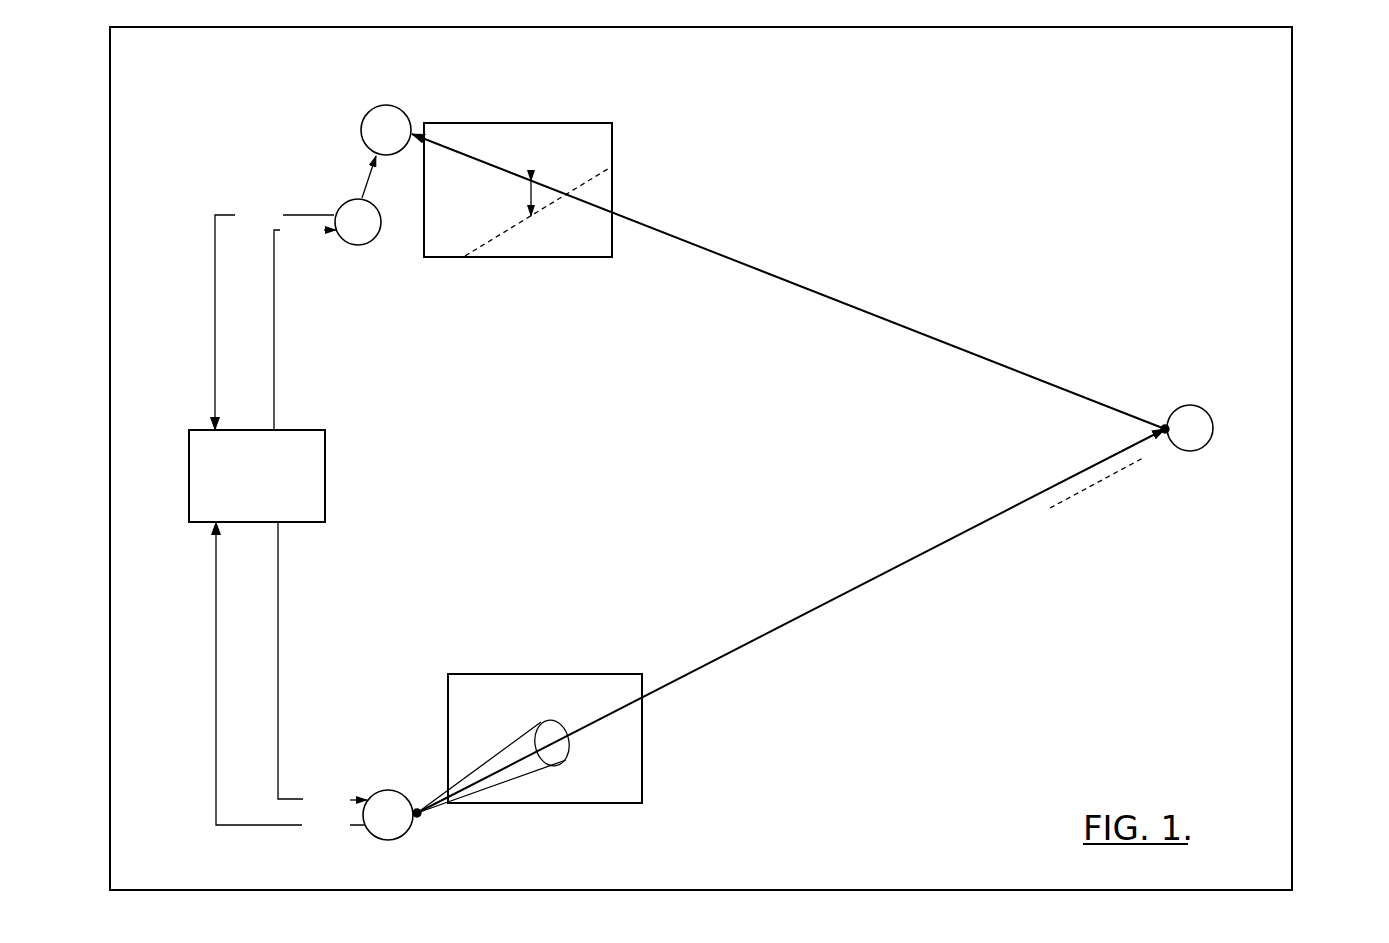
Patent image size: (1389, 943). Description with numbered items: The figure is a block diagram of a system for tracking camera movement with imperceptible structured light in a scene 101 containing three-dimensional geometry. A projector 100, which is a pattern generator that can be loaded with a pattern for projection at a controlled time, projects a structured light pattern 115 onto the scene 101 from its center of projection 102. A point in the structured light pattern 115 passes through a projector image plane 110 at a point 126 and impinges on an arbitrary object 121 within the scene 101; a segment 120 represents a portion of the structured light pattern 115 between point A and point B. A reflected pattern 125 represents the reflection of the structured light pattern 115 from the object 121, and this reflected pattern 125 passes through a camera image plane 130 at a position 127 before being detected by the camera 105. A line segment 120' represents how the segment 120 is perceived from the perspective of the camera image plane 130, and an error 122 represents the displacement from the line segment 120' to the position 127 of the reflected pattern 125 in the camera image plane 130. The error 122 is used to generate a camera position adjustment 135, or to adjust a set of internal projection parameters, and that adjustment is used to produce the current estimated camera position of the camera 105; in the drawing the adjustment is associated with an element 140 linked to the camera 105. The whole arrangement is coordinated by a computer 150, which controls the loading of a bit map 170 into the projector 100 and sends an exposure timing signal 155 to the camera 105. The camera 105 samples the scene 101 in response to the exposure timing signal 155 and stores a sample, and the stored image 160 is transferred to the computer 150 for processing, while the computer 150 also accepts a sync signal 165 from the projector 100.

The projector 100 is at (392, 815).
The scene 101 is at (1293, 282).
The center of projection 102 is at (482, 763).
The camera 105 is at (386, 130).
The projector image plane 110 is at (585, 674).
The structured light pattern 115 is at (782, 625).
The segment 120 is at (1103, 486).
The line segment 120' is at (538, 211).
The object 121 is at (1187, 428).
The error 122 is at (527, 198).
The reflected pattern 125 is at (823, 292).
The point 126 is at (553, 745).
The position 127 is at (531, 181).
The camera image plane 130 is at (503, 123).
The camera position adjustment 135 is at (370, 178).
The light source 140 is at (358, 222).
The computer 150 is at (257, 476).
The exposure timing signal 155 is at (305, 323).
The image 160 is at (274, 316).
The sync signal 165 is at (290, 680).
The bit map 170 is at (322, 667).